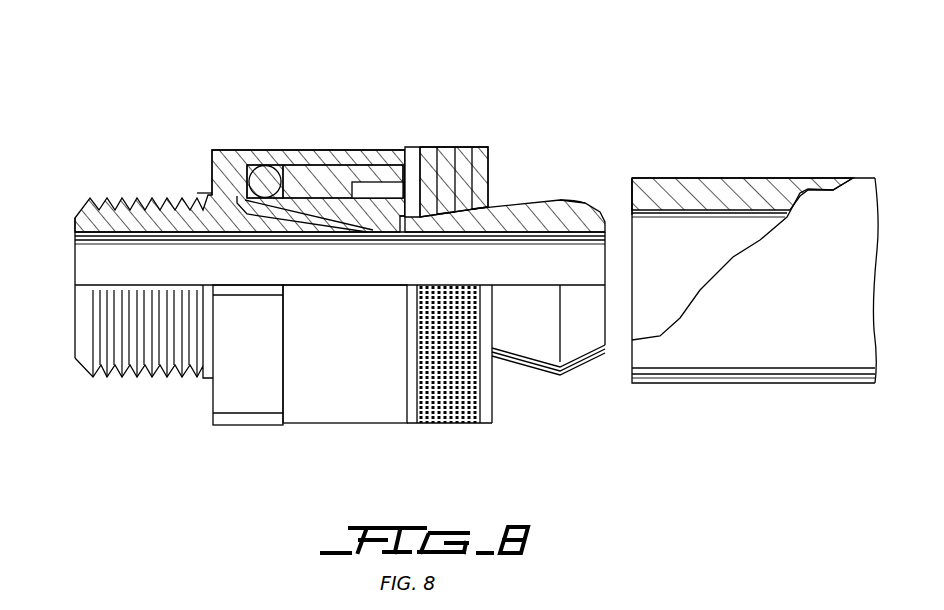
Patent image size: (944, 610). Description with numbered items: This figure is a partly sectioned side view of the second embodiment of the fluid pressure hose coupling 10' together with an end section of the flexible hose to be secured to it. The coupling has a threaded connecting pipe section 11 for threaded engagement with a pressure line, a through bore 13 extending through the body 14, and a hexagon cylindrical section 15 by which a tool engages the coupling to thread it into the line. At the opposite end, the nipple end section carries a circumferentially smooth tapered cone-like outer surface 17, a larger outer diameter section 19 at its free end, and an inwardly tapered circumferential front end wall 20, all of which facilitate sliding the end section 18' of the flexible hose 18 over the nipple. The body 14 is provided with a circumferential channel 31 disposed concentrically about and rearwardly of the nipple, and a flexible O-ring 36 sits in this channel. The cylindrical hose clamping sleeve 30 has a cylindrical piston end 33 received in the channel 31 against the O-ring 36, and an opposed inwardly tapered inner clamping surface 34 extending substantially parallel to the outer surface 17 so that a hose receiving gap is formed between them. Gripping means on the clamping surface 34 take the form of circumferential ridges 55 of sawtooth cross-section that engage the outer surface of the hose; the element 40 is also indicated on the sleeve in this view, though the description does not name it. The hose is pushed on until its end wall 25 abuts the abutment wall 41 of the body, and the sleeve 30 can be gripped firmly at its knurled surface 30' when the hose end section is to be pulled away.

The pressure hose coupling 10' is at (139, 508).
The threaded connecting pipe section 11 is at (97, 378).
The through bore 13 is at (115, 263).
The body 14 is at (360, 395).
The hexagon cylindrical section 15 is at (243, 393).
The smooth tapered cone-like outer surface 17 is at (510, 204).
The flexible hose 18 is at (755, 314).
The end section of flexible hose 18' is at (753, 157).
The larger outer diameter section 19 is at (562, 198).
The inwardly tapered circumferential front end wall 20 is at (587, 336).
The end wall of flexible pipe 25 is at (632, 184).
The cylindrical hose clamping sleeve 30 is at (528, 367).
The knurled surface 30' is at (450, 379).
The circumferential channel 31 is at (352, 166).
The cylindrical piston end 33 is at (282, 180).
The inwardly tapered inner clamping surface 34 is at (440, 178).
The flexible O-ring 36 is at (263, 183).
The ferrule end 40 is at (486, 180).
The abutment wall 41 is at (415, 187).
The circumferential ridges 55 is at (476, 148).